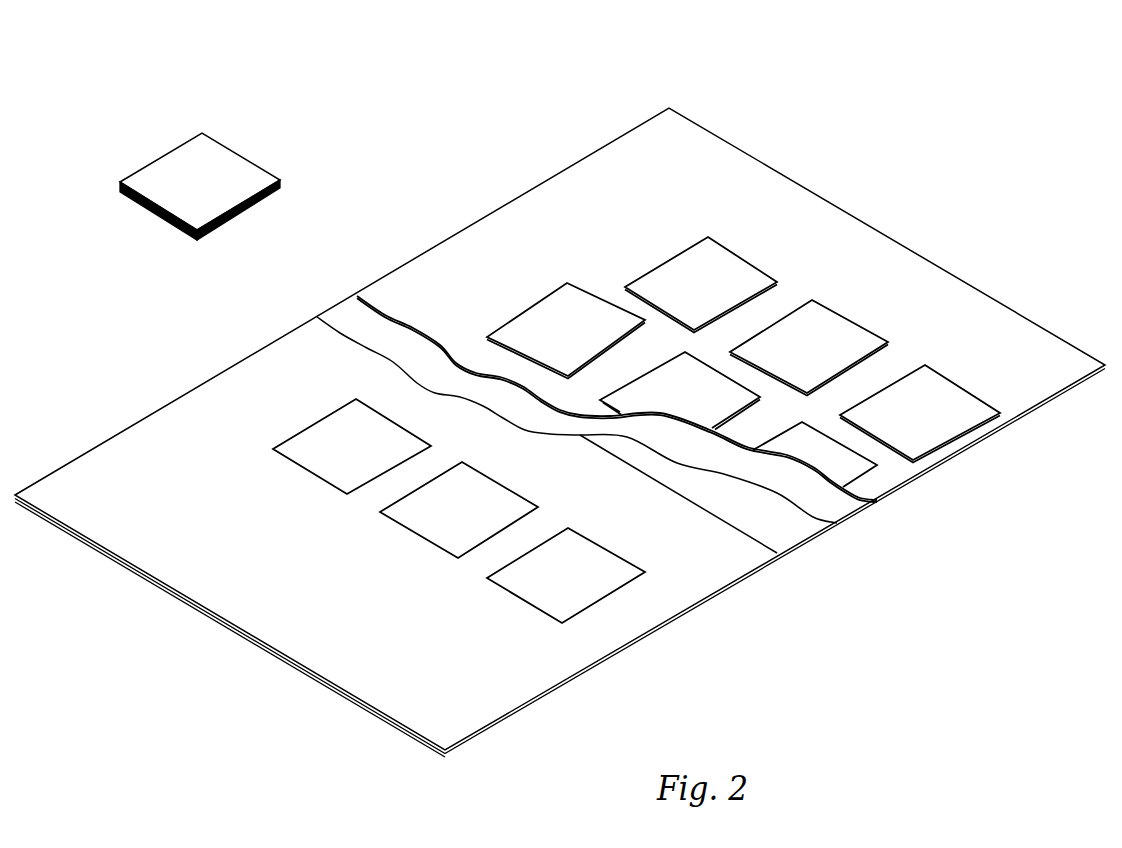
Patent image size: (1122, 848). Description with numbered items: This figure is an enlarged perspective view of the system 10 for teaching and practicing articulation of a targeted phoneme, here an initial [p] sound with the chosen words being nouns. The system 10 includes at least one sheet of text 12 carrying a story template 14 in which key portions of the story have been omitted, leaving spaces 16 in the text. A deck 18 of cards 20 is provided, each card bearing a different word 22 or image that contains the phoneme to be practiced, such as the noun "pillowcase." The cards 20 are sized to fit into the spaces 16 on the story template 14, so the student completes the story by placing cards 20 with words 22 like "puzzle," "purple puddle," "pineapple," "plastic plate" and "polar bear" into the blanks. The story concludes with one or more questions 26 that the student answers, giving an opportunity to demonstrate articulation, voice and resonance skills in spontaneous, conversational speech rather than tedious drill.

The system for teaching and practicing articulation of a targeted phoneme 10 is at (428, 147).
The sheet of text 12 is at (973, 448).
The story template 14 is at (617, 152).
The spaces 16 is at (400, 427).
The deck of cards 18 is at (139, 218).
The cards 20 is at (699, 240).
The words 22 is at (198, 164).
The questions 26 is at (195, 481).